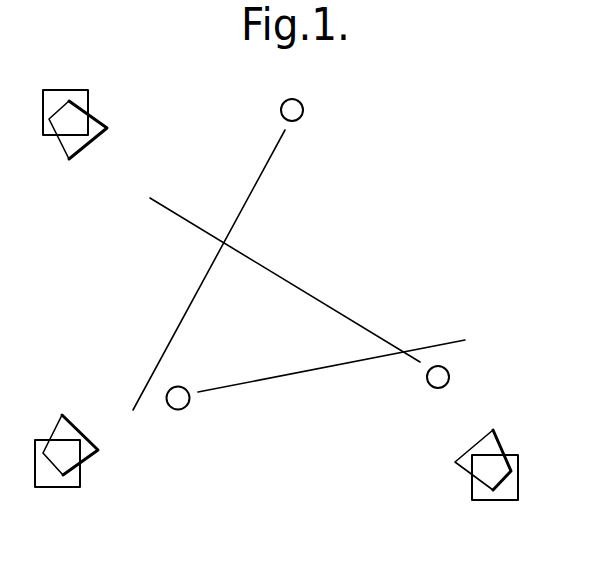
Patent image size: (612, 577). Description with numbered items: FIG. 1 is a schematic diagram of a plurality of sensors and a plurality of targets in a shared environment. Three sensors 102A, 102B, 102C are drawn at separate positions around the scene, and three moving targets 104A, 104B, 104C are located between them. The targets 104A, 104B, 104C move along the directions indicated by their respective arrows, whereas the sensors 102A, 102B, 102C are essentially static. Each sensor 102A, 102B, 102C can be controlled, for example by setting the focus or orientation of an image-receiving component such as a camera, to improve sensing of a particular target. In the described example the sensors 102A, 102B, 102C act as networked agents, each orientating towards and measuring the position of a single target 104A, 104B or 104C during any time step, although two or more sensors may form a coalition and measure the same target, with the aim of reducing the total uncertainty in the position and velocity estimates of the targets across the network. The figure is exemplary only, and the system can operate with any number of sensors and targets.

The sensor 102A is at (505, 482).
The sensor 102B is at (53, 477).
The sensor 102C is at (60, 100).
The moving target 104A is at (450, 375).
The moving target 104B is at (303, 107).
The moving target 104C is at (178, 410).